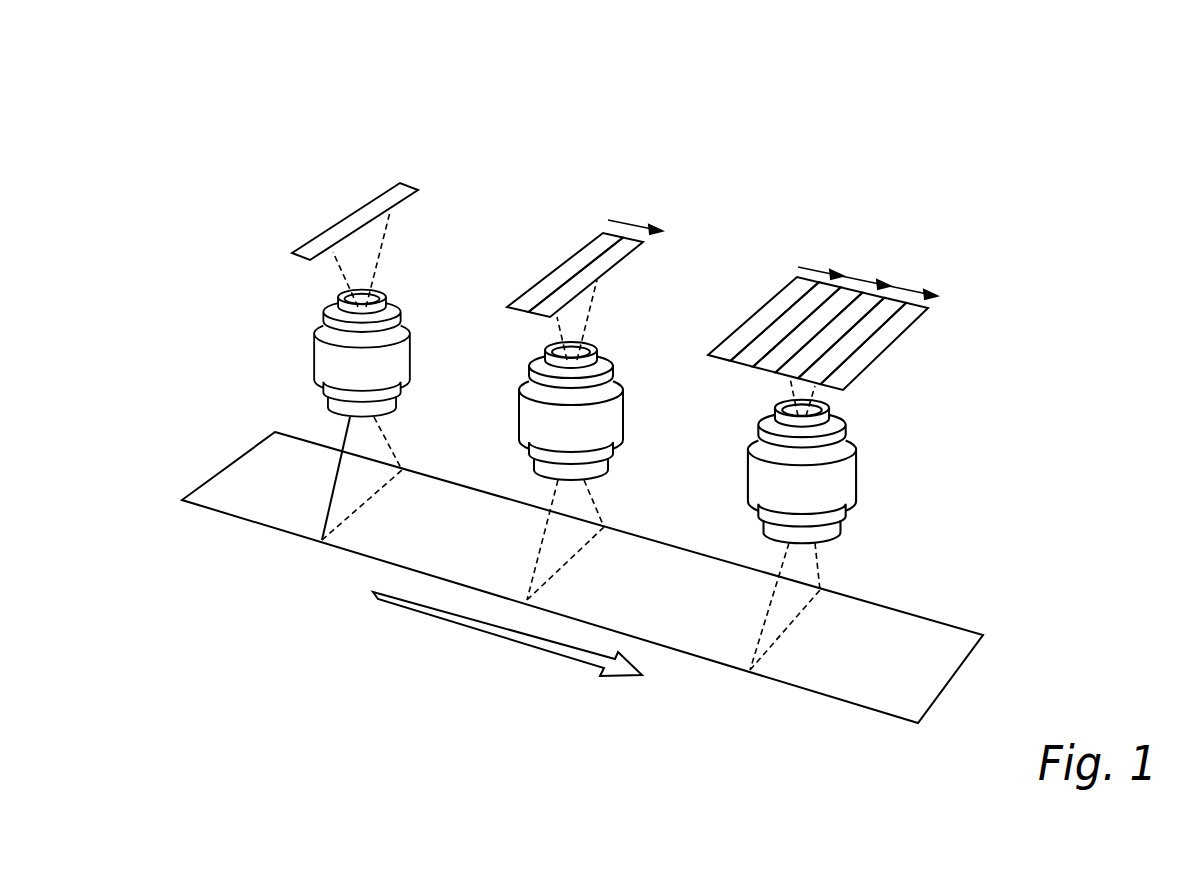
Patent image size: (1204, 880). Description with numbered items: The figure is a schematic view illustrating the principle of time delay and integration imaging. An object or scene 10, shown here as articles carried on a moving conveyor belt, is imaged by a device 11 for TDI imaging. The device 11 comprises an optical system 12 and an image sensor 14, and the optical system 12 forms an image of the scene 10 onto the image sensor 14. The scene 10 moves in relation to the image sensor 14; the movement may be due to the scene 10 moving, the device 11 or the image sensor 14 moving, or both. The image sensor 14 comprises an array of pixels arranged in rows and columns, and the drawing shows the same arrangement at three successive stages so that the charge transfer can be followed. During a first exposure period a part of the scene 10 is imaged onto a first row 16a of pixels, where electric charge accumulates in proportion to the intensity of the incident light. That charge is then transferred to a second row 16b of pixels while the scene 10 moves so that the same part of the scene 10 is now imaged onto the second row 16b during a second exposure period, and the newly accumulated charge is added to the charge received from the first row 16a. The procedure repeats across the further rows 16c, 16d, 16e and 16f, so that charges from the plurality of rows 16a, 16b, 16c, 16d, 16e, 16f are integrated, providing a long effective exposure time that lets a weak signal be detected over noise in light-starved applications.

The scene 10 is at (345, 518).
The device for TDI imaging 11 is at (278, 153).
The optical system 12 is at (327, 357).
The image sensor 14 is at (950, 172).
The first row of pixels 16a is at (403, 192).
The second row of pixels 16b is at (605, 265).
The row of pixels 16c is at (828, 312).
The row of pixels 16d is at (860, 308).
The row of pixels 16e is at (887, 305).
The row of pixels 16f is at (867, 347).